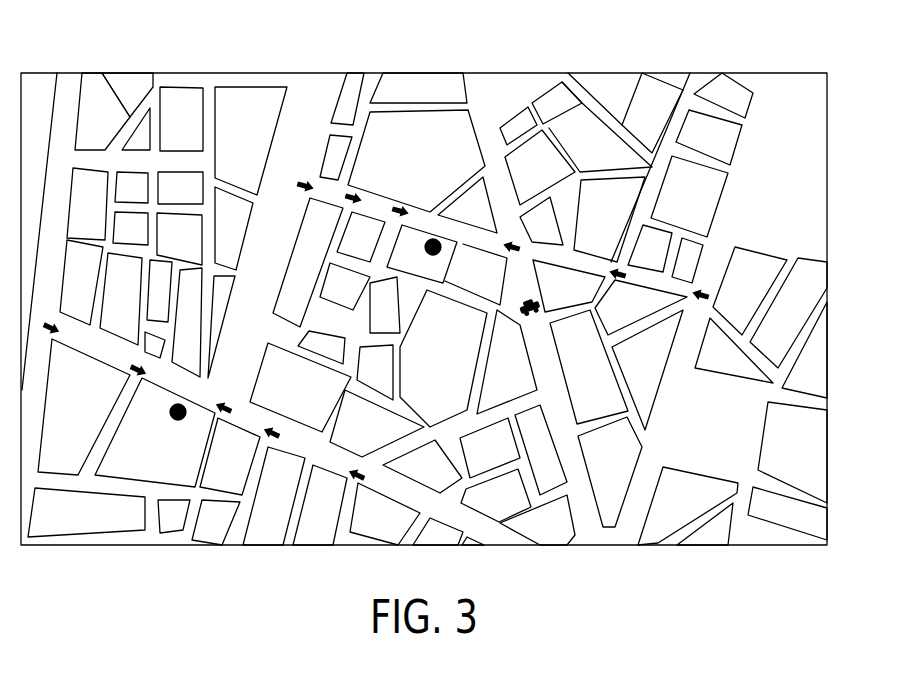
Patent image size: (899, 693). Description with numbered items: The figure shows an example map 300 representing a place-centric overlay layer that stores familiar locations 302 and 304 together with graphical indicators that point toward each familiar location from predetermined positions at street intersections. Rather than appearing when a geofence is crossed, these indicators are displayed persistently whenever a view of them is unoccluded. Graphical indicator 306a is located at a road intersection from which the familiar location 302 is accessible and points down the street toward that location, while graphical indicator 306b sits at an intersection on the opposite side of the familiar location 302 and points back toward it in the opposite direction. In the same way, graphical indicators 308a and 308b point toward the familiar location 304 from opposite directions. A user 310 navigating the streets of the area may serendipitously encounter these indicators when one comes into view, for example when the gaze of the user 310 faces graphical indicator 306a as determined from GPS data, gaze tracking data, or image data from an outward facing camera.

The map 300 is at (754, 40).
The familiar location 302 is at (430, 255).
The familiar location 304 is at (170, 420).
The graphical indicator 306a is at (516, 251).
The graphical indicator 306b is at (393, 210).
The graphical indicator 308a is at (130, 366).
The graphical indicator 308b is at (234, 405).
The user 310 is at (536, 316).